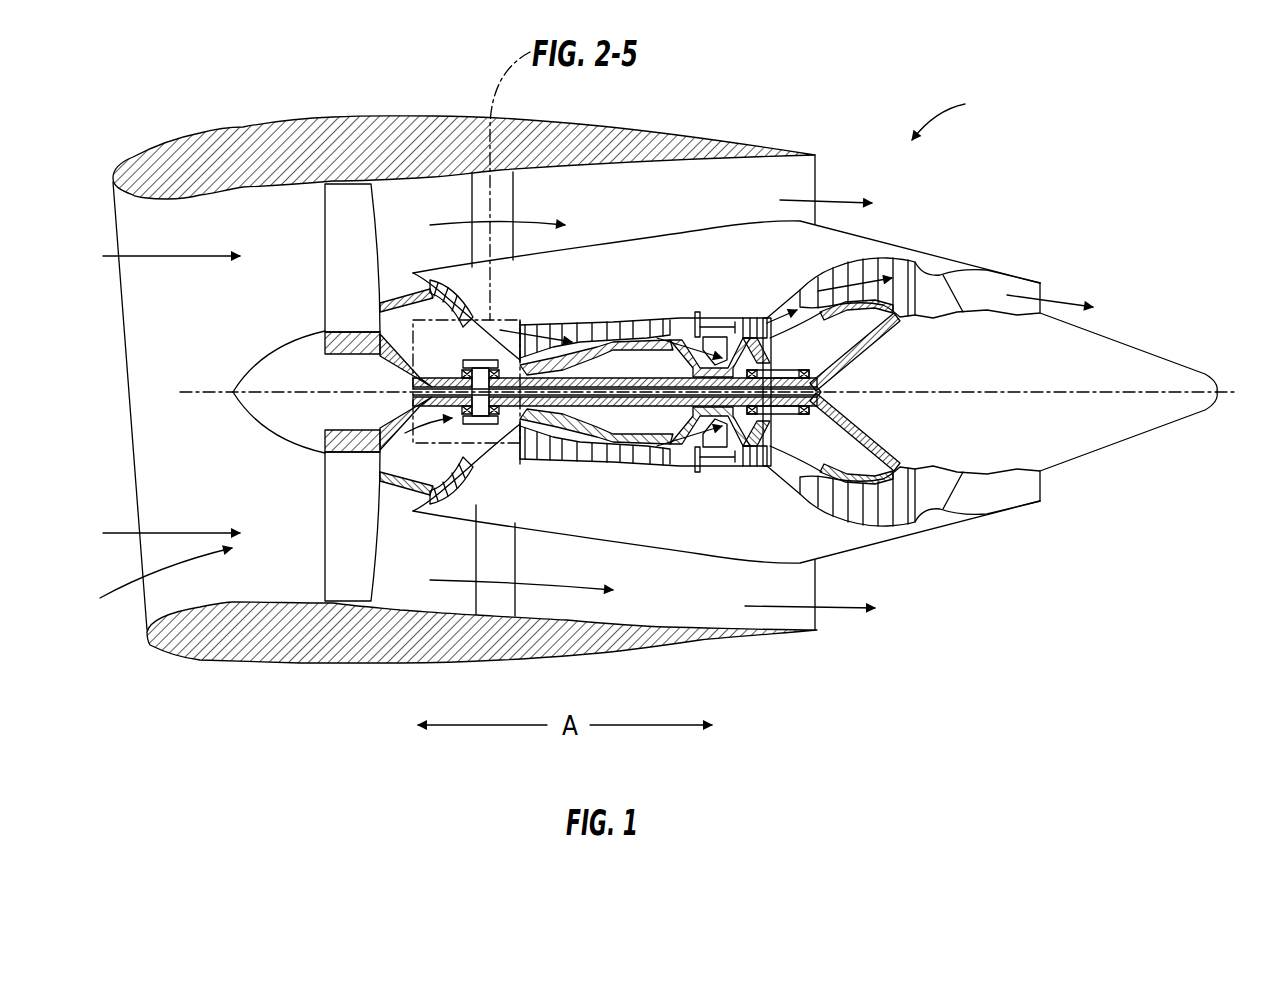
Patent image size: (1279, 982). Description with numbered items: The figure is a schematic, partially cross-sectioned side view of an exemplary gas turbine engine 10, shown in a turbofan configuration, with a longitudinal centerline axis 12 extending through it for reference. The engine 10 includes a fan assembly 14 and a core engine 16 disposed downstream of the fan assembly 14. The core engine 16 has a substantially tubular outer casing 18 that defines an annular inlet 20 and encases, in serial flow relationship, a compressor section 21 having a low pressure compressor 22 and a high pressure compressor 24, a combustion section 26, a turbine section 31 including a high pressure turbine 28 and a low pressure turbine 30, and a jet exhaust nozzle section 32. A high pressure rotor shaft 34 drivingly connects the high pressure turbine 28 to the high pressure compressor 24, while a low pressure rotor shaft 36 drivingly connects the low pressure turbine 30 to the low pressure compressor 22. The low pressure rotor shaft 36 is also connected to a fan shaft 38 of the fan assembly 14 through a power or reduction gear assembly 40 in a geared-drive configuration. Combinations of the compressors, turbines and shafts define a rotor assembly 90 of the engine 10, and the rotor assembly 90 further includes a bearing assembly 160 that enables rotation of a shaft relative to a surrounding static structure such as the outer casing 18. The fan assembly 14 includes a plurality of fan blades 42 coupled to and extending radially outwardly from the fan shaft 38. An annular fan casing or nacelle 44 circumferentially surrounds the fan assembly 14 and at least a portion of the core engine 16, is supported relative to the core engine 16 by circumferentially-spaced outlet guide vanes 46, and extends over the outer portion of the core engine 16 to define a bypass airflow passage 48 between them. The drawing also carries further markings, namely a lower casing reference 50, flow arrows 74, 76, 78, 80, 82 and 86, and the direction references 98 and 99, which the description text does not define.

The gas turbine engine 10 is at (954, 114).
The axial centerline axis 12 is at (984, 392).
The fan assembly 14 is at (397, 205).
The core engine 16 is at (703, 220).
The outer casing 18 is at (684, 560).
The annular inlet 20 is at (413, 500).
The compressor section 21 is at (528, 296).
The low pressure compressor 22 is at (472, 476).
The high pressure compressor 24 is at (543, 458).
The combustion section 26 is at (717, 457).
The high pressure turbine 28 is at (763, 465).
The low pressure turbine 30 is at (900, 513).
The turbine section 31 is at (770, 292).
The jet exhaust nozzle section 32 is at (965, 505).
The high pressure rotor shaft 34 is at (760, 350).
The low pressure rotor shaft 36 is at (850, 353).
The fan shaft 38 is at (380, 364).
The power gear assembly 40 is at (471, 360).
The fan blades 42 is at (344, 233).
The nacelle 44 is at (326, 122).
The outlet guide vanes 46 is at (497, 207).
The bypass airflow passage 48 is at (640, 224).
The fan casing 50 is at (370, 665).
The inlet air 74 is at (165, 256).
The air flow 76 is at (149, 582).
The bypass air 78 is at (467, 222).
The inner cowl 80 is at (397, 287).
The core air 82 is at (532, 327).
The combustion gases 86 is at (843, 281).
The rotor assembly 90 is at (594, 346).
The aft direction 98 is at (1237, 402).
The forward direction 99 is at (88, 402).
The bearing assembly 160 is at (395, 425).